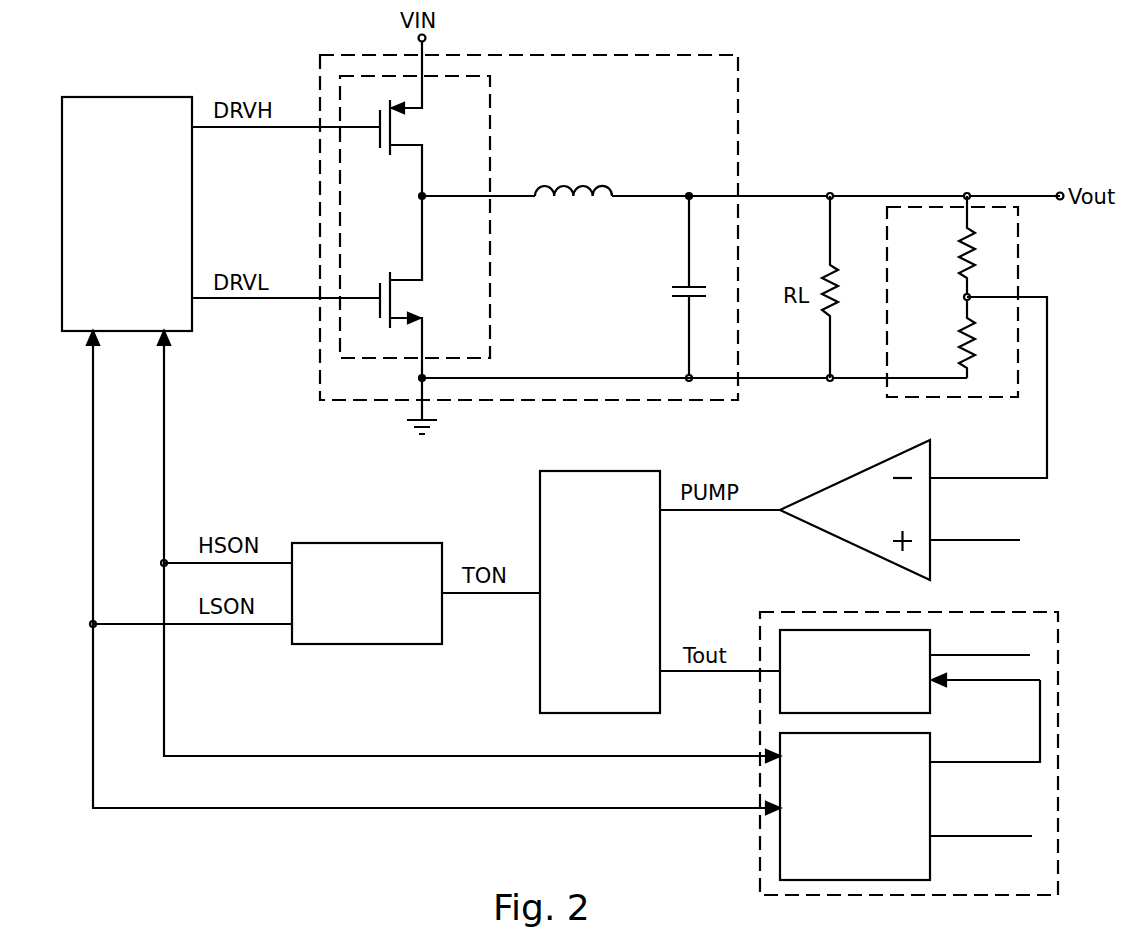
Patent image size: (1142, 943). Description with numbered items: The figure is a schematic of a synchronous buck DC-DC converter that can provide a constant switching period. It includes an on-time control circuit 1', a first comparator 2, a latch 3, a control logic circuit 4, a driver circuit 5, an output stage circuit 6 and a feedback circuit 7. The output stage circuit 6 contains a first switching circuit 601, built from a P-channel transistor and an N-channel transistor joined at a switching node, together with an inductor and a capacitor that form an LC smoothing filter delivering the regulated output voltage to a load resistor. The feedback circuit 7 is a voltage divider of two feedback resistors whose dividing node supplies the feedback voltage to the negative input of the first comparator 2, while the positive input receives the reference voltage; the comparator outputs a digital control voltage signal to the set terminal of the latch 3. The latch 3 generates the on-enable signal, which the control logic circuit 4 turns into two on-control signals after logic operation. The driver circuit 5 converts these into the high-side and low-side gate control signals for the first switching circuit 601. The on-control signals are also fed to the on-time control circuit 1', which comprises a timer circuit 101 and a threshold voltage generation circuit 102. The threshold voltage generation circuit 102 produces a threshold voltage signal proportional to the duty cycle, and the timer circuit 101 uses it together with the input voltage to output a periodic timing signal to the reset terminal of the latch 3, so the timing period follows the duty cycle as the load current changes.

The driver circuit 5 is at (124, 97).
The output stage circuit 6 is at (738, 88).
The first switching circuit 601 is at (490, 318).
The feedback circuit 7 is at (1018, 256).
The first comparator 2 is at (846, 480).
The latch 3 is at (612, 471).
The control logic circuit 4 is at (362, 543).
The on-time control circuit 1' is at (901, 730).
The timer circuit 101 is at (808, 630).
The threshold voltage generation circuit 102 is at (780, 857).